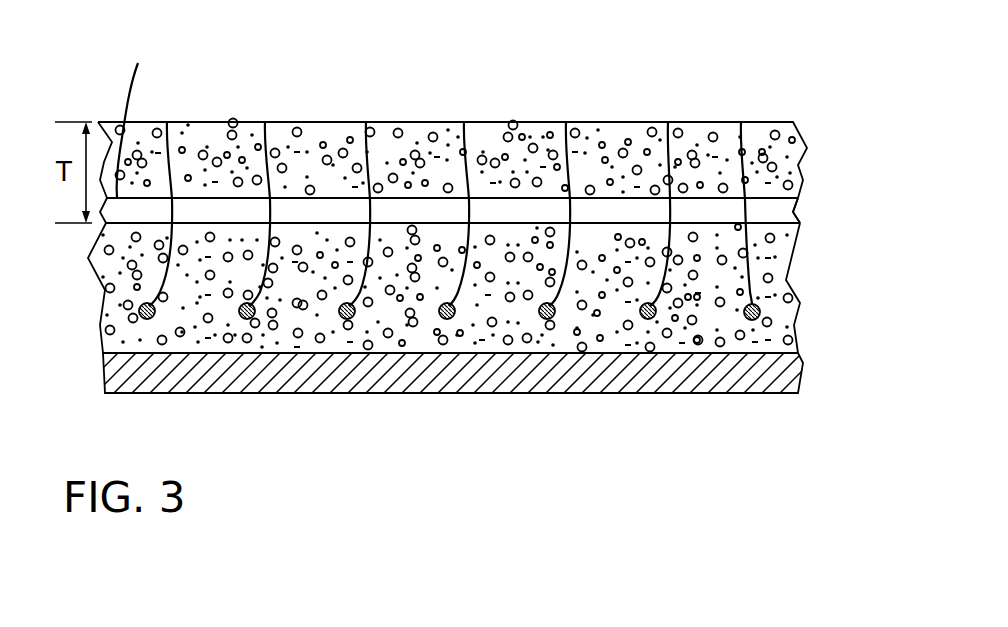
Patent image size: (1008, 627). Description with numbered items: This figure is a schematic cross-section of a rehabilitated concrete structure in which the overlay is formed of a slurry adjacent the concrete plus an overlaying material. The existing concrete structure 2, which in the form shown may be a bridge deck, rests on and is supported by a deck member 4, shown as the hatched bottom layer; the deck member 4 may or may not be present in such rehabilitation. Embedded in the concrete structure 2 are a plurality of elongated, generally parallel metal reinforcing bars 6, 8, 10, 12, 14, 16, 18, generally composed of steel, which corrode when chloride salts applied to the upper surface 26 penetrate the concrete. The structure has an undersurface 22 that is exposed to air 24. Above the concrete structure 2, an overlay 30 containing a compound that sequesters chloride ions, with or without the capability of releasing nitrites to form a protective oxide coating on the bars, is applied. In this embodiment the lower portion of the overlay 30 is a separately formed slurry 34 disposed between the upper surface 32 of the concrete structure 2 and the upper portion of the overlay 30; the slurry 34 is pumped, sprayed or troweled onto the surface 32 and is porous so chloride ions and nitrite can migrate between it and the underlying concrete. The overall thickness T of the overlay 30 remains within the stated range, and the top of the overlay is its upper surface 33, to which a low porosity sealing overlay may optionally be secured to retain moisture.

The concrete structure 2 is at (793, 282).
The deck member 4 is at (803, 368).
The reinforcing bar 6 is at (167, 122).
The reinforcing bar 8 is at (265, 122).
The reinforcing bar 10 is at (366, 122).
The reinforcing bar 12 is at (464, 122).
The reinforcing bar 14 is at (566, 122).
The reinforcing bar 16 is at (668, 122).
The reinforcing bar 18 is at (741, 122).
The undersurface 22 is at (175, 393).
The air 24 is at (472, 453).
The upper surface 26 is at (150, 122).
The overlay 30 is at (636, 116).
The upper surface of the concrete structure 32 is at (323, 222).
The upper surface of the overlay 33 is at (435, 122).
The slurry 34 is at (804, 209).